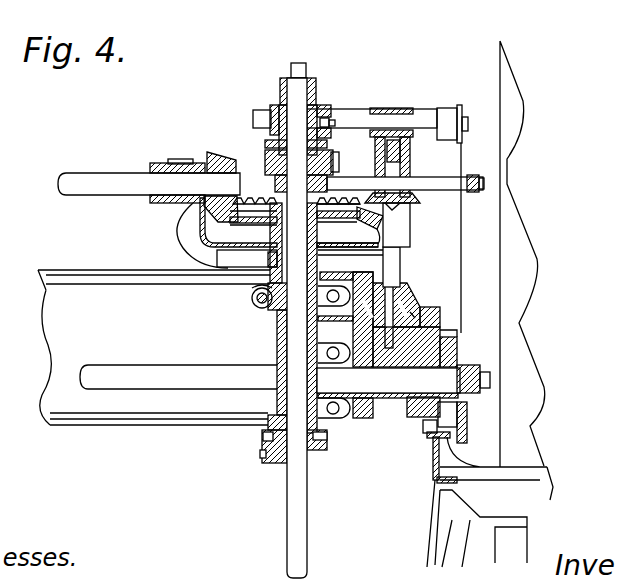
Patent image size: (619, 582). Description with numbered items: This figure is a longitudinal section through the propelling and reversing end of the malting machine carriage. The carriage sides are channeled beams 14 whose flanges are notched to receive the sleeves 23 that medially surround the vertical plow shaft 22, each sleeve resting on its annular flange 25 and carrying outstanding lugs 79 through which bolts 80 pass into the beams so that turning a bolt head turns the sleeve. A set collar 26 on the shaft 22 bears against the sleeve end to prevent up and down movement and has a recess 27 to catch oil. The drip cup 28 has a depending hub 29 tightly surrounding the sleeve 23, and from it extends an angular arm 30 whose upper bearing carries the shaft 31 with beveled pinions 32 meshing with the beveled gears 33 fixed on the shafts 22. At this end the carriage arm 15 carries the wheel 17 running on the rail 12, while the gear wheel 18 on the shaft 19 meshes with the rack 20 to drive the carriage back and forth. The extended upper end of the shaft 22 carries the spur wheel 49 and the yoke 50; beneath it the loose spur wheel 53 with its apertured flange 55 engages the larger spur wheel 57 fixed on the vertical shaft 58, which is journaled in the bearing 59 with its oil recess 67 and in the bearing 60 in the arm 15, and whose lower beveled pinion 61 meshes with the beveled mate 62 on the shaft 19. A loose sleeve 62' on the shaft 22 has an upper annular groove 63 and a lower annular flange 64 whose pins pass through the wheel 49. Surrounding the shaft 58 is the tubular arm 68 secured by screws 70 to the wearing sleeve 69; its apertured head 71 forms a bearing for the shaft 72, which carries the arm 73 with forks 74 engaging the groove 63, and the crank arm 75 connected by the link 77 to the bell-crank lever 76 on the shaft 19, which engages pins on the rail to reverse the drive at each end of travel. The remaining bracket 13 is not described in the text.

The rails 12 is at (435, 476).
The bracket 13 is at (432, 525).
The channeled beams 14 is at (82, 272).
The arms 15 is at (362, 437).
The wheels 17 is at (450, 417).
The gear wheels 18 is at (430, 313).
The shaft 19 is at (200, 372).
The racks 20 is at (428, 432).
The shafts 22 is at (287, 507).
The sleeves 23 is at (277, 340).
The annular flange 25 is at (250, 283).
The set collar 26 is at (314, 460).
The recess or cavity 27 is at (262, 441).
The drip cups 28 is at (232, 252).
The depending hub 29 is at (268, 265).
The angular arm 30 is at (191, 232).
The shaft 31 is at (98, 180).
The beveled pinions 32 is at (208, 152).
The beveled gears 33 is at (262, 213).
The spur wheel 49 is at (345, 160).
The yoke 50 is at (289, 79).
The spur wheel 53 is at (280, 178).
The apertured flange 55 is at (350, 135).
The spur wheel 57 is at (485, 183).
The vertical shaft 58 is at (392, 267).
The bearing 59 is at (400, 227).
The bearing 60 is at (393, 425).
The beveled pinion 61 is at (410, 298).
The beveled mate 62 is at (468, 286).
The sleeves 62' is at (254, 120).
The annular grooves 63 is at (272, 108).
The annular flanges 64 is at (332, 128).
The cavity or recess 67 is at (413, 198).
The tubular arm 68 is at (410, 142).
The wearing sleeve 69 is at (412, 141).
The screws 70 is at (410, 156).
The head 71 is at (390, 113).
The shaft 72 is at (338, 150).
The arm 73 is at (325, 115).
The forks 74 is at (322, 108).
The crank arm 75 is at (460, 114).
The bell-crank lever 76 is at (470, 407).
The link 77 is at (463, 338).
The lugs 79 is at (257, 303).
The bolts 80 is at (265, 307).